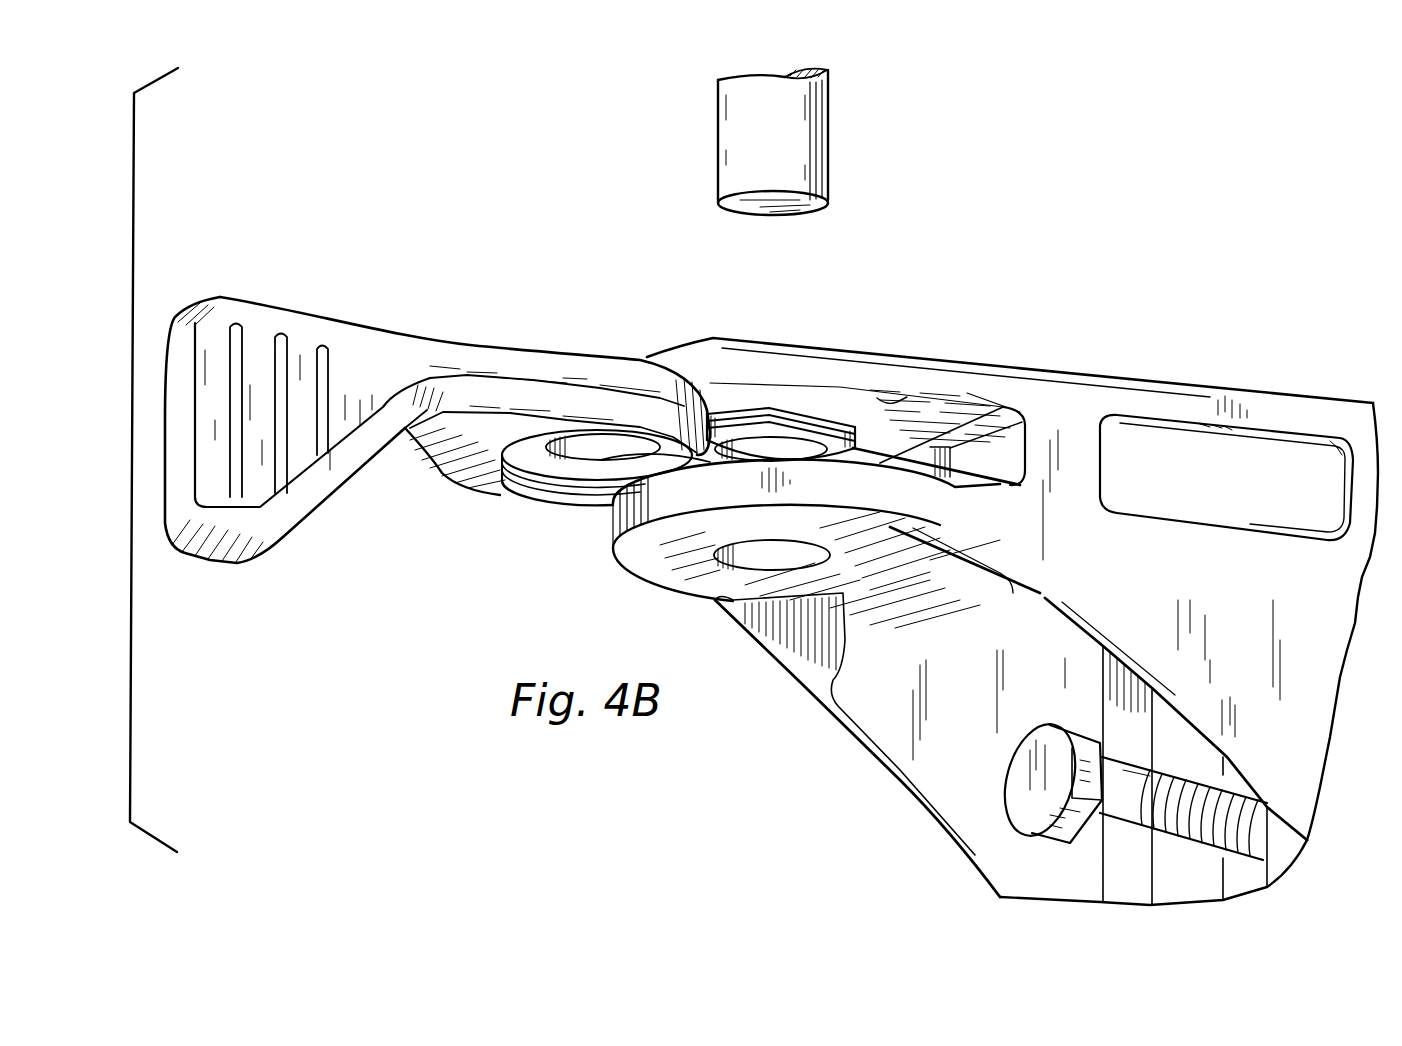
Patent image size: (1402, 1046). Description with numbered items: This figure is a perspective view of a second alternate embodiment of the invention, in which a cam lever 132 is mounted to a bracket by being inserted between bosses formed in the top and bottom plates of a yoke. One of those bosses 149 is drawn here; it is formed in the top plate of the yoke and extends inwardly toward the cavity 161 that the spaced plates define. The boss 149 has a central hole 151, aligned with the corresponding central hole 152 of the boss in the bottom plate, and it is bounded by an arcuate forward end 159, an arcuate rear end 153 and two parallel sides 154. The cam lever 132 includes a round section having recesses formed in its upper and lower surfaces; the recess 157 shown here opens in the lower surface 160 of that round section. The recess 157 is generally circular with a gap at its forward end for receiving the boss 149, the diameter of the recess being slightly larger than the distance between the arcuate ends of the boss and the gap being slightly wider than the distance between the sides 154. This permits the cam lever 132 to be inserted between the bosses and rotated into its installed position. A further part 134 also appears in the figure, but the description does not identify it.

The cam lever 132 is at (461, 331).
The pivot pin 134 is at (807, 142).
The boss 149 is at (840, 444).
The central hole 151 is at (793, 443).
The central hole 152 is at (733, 548).
The arcuate rear end 153 is at (853, 448).
The parallel sides 154 is at (774, 418).
The recess 157 is at (523, 453).
The arcuate forward end 159 is at (720, 428).
The lower surface 160 is at (568, 496).
The cavity 161 is at (888, 404).